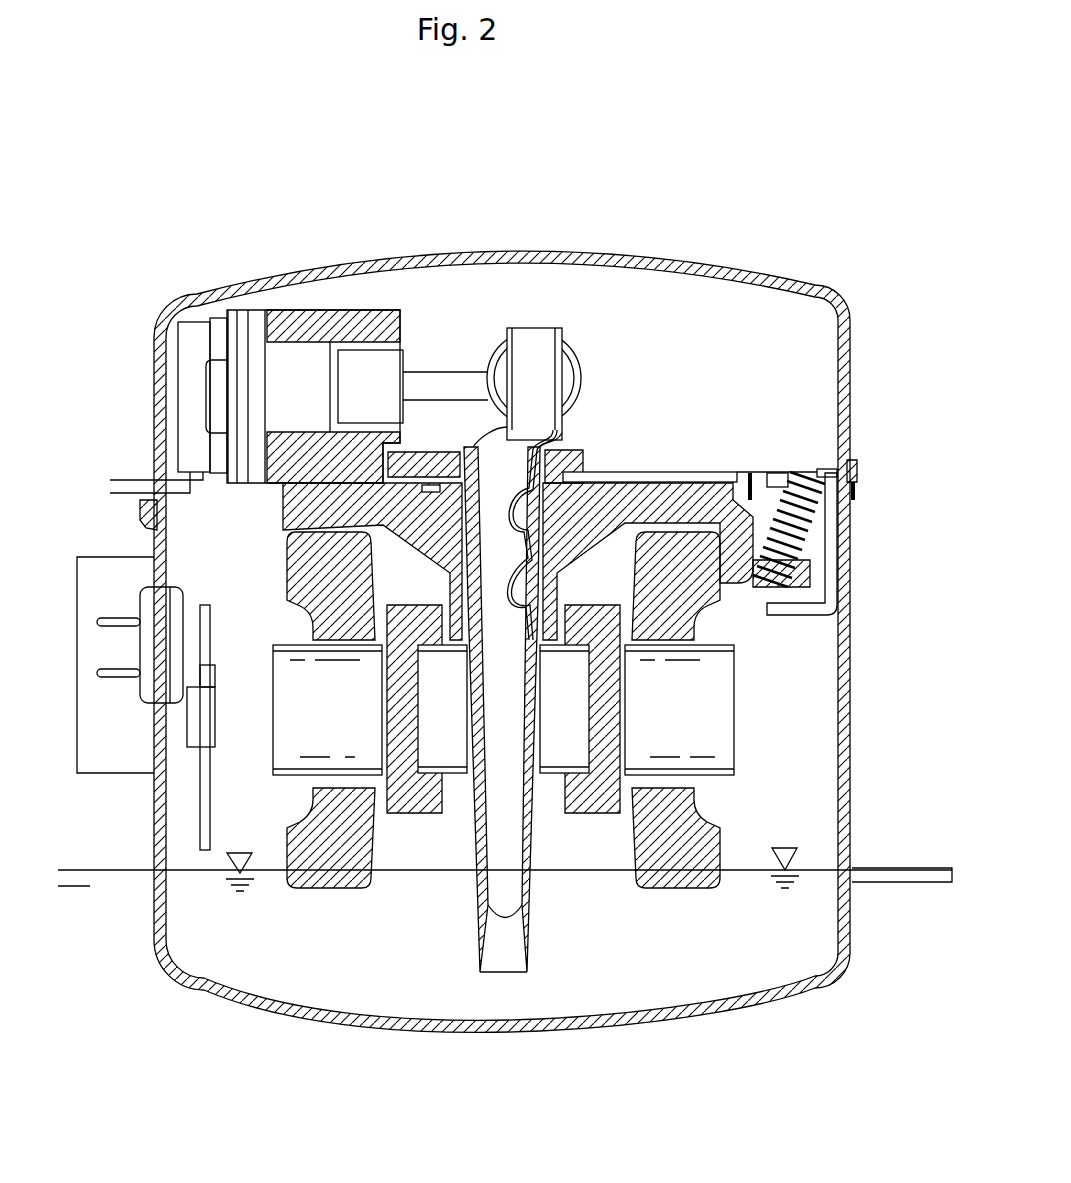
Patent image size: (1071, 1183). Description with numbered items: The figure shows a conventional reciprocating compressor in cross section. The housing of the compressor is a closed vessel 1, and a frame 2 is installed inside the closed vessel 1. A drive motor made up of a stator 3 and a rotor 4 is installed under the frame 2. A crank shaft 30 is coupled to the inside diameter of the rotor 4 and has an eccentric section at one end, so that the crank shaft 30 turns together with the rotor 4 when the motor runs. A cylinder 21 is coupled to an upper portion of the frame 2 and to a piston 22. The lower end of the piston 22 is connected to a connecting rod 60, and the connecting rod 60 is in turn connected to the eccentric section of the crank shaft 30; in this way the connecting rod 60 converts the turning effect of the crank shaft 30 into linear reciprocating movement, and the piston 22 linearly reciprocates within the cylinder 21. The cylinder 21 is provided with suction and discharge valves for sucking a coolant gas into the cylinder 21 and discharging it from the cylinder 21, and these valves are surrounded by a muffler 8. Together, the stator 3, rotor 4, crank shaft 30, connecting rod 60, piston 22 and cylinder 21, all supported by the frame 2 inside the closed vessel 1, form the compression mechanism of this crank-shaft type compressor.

The closed vessel 1 is at (856, 592).
The frame 2 is at (717, 495).
The stator 3 is at (313, 880).
The rotor 4 is at (413, 805).
The muffler 8 is at (195, 340).
The cylinder 21 is at (329, 322).
The piston 22 is at (385, 380).
The crank shaft 30 is at (476, 945).
The connecting rod 60 is at (452, 385).